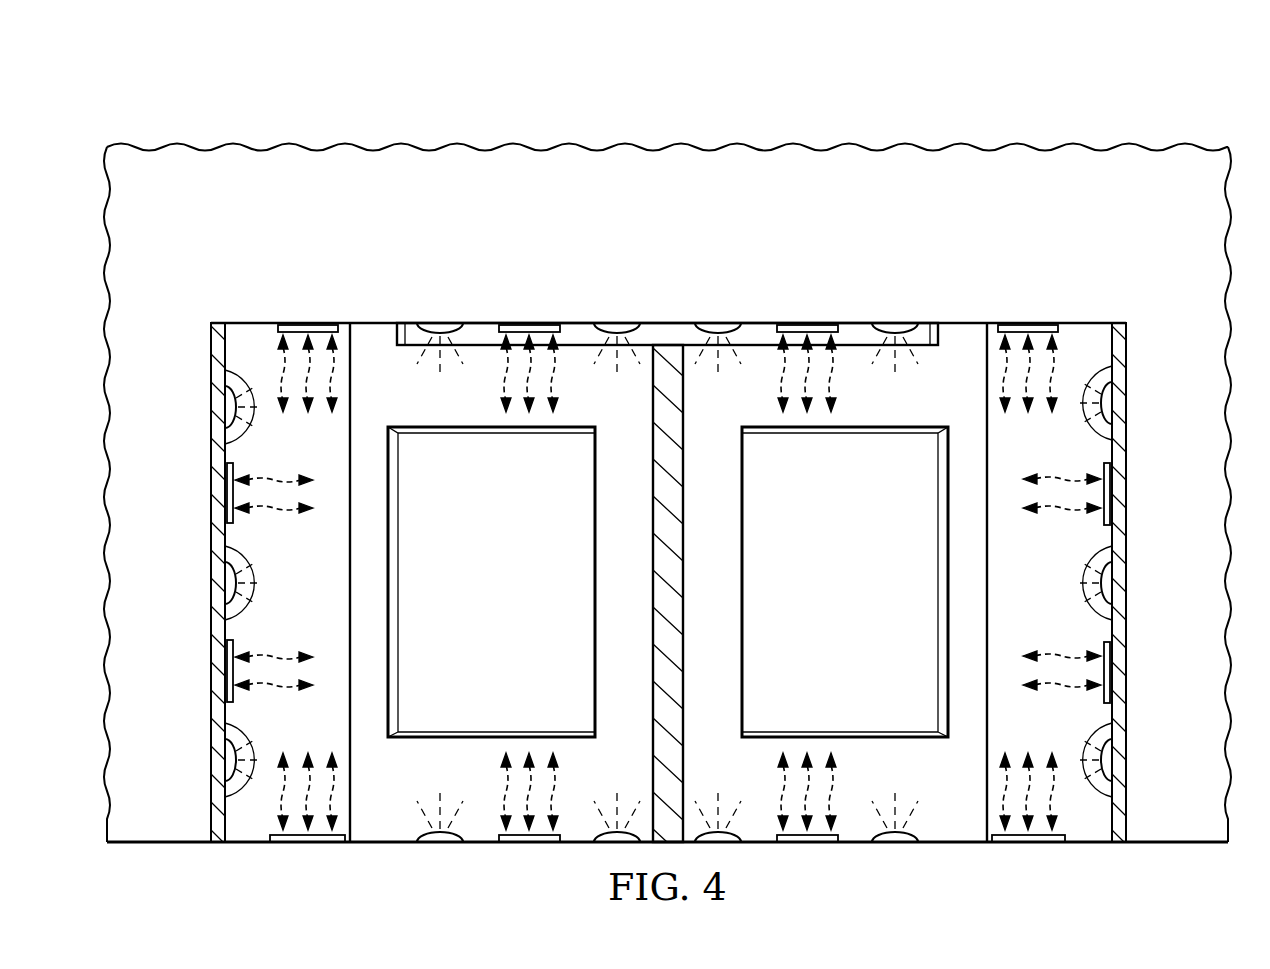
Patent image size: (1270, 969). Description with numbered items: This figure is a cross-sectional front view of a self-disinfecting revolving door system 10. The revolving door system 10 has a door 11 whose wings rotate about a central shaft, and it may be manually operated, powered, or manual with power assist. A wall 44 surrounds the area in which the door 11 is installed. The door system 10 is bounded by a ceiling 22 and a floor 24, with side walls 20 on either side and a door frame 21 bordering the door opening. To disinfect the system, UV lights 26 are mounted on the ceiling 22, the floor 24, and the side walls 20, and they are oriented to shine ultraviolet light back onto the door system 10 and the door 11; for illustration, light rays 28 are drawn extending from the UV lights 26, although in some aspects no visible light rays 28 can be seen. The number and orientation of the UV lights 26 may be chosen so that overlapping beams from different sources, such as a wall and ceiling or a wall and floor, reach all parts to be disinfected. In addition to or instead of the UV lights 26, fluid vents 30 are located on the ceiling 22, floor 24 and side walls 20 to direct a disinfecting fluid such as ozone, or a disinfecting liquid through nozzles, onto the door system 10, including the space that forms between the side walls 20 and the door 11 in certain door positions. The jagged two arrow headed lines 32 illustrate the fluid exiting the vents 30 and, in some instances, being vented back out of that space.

The revolving door system 10 is at (286, 76).
The door 11 is at (728, 562).
The side walls 20 is at (217, 498).
The door frame 21 is at (984, 340).
The ceiling 22 is at (375, 323).
The floor 24 is at (376, 843).
The UV lights 26 is at (224, 445).
The light rays 28 is at (224, 372).
The fluid vents 30 is at (234, 466).
The jagged two arrow headed lines 32 is at (267, 512).
The wall 44 is at (1141, 252).